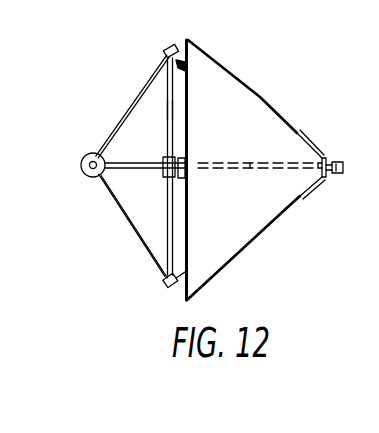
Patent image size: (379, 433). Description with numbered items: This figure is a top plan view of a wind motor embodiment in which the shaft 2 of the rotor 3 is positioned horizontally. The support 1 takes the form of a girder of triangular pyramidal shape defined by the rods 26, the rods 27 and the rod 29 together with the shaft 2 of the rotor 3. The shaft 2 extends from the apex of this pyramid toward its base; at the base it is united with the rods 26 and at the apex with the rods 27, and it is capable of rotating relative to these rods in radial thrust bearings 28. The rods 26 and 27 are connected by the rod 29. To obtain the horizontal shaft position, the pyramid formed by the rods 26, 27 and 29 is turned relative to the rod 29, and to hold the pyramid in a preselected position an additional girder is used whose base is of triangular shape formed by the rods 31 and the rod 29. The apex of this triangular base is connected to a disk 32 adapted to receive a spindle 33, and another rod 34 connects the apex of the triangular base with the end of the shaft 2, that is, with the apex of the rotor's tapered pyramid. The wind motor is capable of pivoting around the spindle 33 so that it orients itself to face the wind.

The support 1 is at (307, 132).
The shaft 2 is at (260, 170).
The rotor 3 is at (262, 95).
The rods 26 is at (304, 195).
The rods 27 is at (168, 110).
The radial thrust bearings 28 is at (339, 162).
The rod 29 is at (170, 110).
The rods 31 is at (146, 88).
The disk 32 is at (85, 172).
The spindle 33 is at (93, 152).
The rod 34 is at (150, 169).